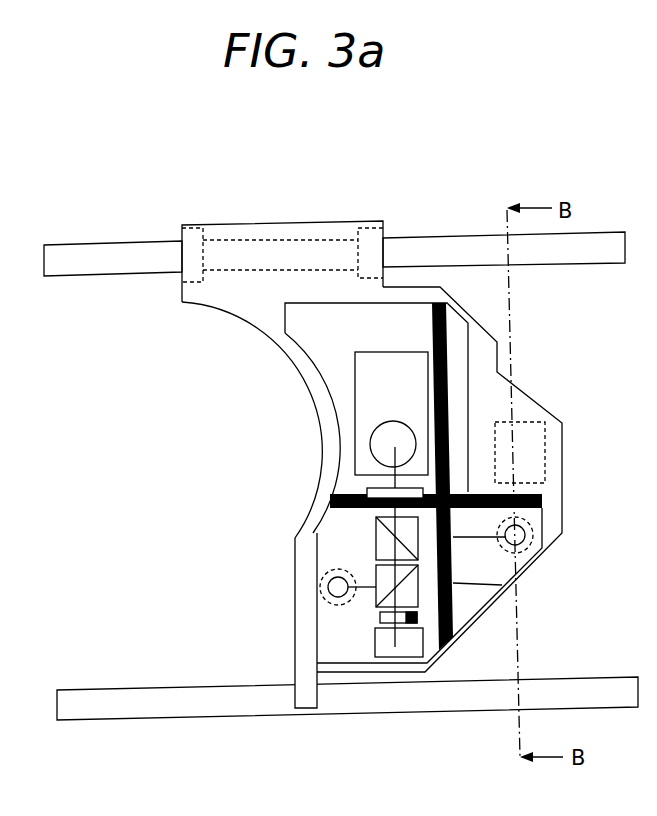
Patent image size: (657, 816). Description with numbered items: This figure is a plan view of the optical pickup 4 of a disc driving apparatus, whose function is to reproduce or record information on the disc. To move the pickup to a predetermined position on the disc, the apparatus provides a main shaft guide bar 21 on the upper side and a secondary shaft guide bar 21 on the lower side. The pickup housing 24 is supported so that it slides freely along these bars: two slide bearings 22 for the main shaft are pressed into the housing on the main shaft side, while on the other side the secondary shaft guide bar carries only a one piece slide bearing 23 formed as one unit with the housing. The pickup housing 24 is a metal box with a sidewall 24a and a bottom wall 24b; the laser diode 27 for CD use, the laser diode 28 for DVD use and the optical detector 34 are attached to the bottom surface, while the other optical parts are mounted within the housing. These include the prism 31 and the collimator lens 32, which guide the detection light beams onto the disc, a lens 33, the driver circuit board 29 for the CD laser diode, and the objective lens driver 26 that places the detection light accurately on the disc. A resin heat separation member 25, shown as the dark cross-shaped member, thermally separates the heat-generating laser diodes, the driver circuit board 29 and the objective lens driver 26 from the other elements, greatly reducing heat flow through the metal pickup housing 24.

The optical pickup 4 is at (190, 619).
The guide bar 21 is at (88, 253).
The slide bearing 22 is at (193, 240).
The one piece slide bearing 23 is at (310, 700).
The pickup housing 24 is at (311, 317).
The sidewall 24a is at (303, 662).
The bottom wall 24b is at (330, 545).
The heat separation member 25 is at (448, 358).
The objective lens driver 26 is at (402, 363).
The laser diode for CD use 27 is at (524, 533).
The laser diode for DVD use 28 is at (330, 587).
The driver circuit board 29 is at (537, 435).
The prism 31 is at (380, 543).
The collimator lens 32 is at (372, 492).
The lens 33 is at (410, 622).
The optical detector 34 is at (387, 650).